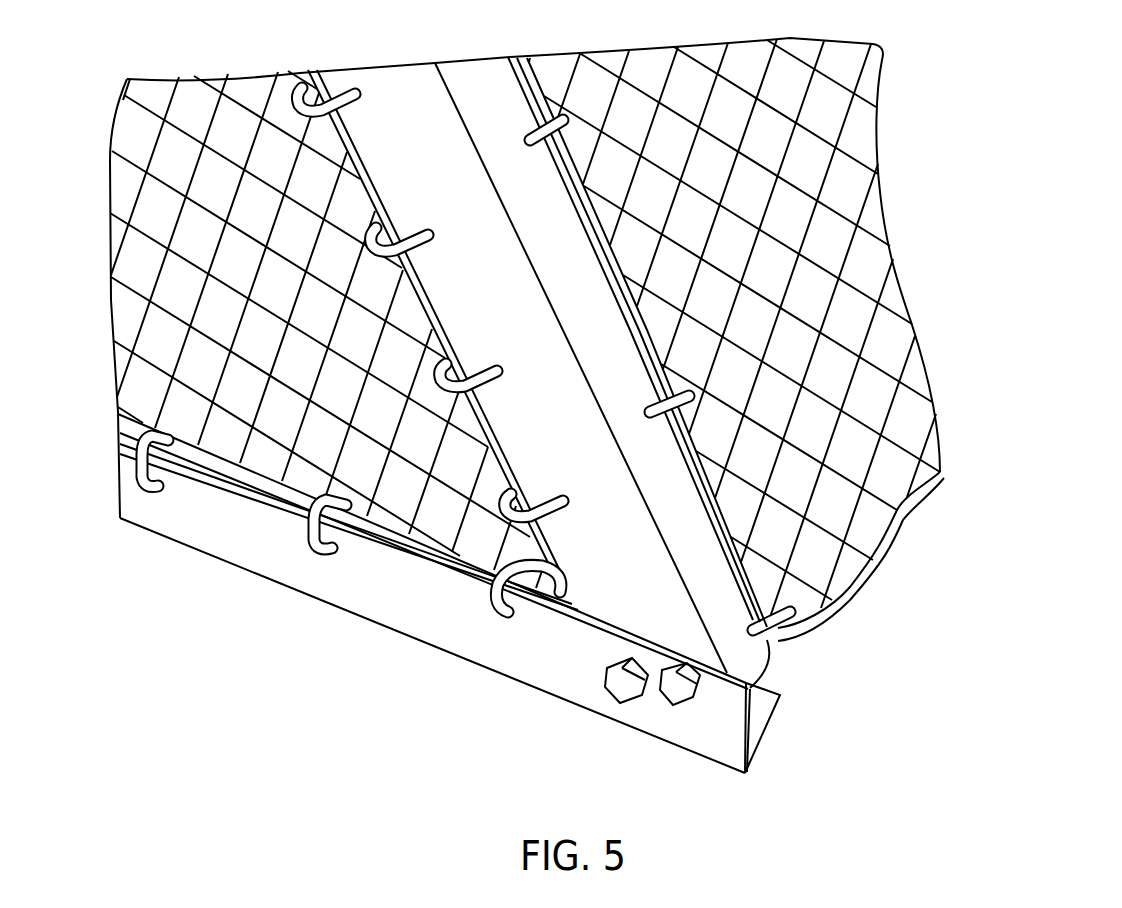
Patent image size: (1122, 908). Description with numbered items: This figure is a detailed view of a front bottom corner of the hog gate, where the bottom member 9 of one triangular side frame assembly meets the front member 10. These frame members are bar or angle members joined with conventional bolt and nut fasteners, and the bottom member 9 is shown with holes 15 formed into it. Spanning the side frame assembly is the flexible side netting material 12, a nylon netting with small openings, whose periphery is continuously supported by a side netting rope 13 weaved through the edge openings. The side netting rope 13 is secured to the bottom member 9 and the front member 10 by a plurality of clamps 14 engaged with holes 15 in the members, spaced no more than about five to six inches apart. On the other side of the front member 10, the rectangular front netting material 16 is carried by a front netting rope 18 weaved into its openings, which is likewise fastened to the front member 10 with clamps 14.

The bottom member 9 is at (430, 618).
The front member 10 is at (615, 580).
The side netting material 12 is at (160, 277).
The side netting rope 13 is at (227, 472).
The clamps 14 is at (310, 540).
The holes 15 is at (343, 550).
The front netting material 16 is at (867, 228).
The front netting rope 18 is at (870, 582).